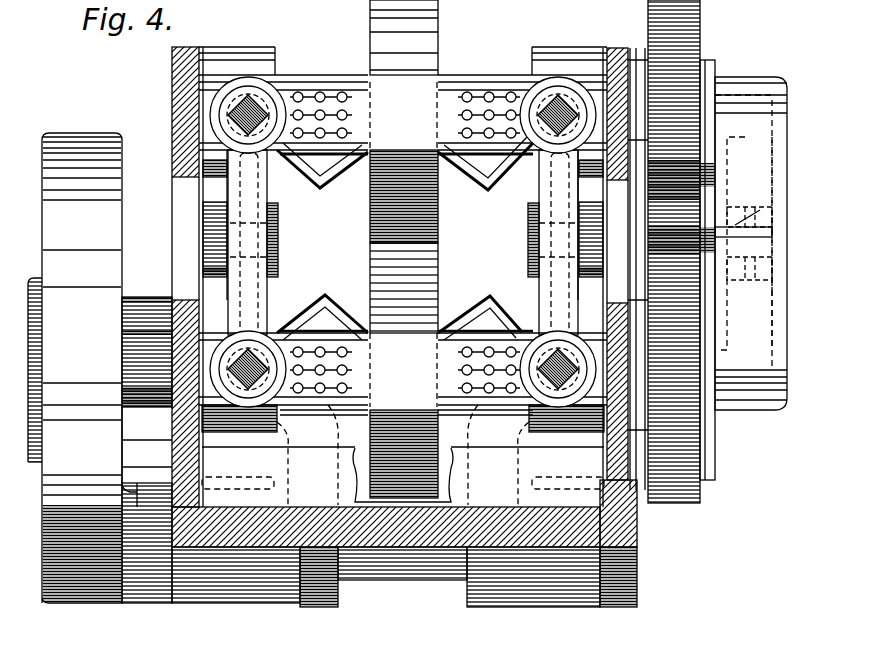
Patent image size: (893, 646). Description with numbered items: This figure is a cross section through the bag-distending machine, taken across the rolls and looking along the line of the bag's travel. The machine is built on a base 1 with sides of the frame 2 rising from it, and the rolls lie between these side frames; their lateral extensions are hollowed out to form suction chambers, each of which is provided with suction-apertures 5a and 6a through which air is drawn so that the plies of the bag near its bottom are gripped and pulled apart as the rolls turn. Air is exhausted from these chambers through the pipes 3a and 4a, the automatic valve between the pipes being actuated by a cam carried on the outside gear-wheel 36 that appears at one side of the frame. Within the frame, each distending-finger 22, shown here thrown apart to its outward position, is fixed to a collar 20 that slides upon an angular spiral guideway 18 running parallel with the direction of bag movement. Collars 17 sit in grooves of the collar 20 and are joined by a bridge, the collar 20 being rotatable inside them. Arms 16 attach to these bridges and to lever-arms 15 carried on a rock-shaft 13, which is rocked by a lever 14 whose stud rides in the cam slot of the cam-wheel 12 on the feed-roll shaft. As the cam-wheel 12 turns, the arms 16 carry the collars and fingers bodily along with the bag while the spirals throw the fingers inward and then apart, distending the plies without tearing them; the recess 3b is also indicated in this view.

The base 1 is at (450, 537).
The sides of the frame 2 is at (178, 73).
The pipe 3a is at (749, 213).
The valve recess 3b is at (752, 205).
The pipe 4a is at (745, 320).
The suction-apertures 5a is at (345, 132).
The suction-apertures 6a is at (345, 387).
The cam-wheel 12 is at (75, 368).
The rock-shaft 13 is at (456, 579).
The lever 14 is at (148, 604).
The lever-arms 15 is at (318, 428).
The arms 16 is at (215, 206).
The collars 17 is at (258, 239).
The angular spiral guideway 18 is at (258, 100).
The collar 20 is at (250, 80).
The distending-fingers 22 is at (320, 188).
The gear-wheel 36 is at (690, 37).